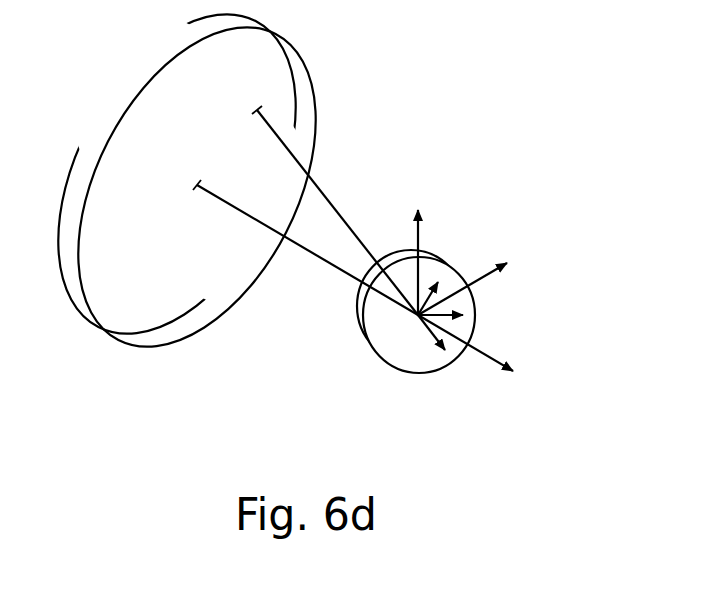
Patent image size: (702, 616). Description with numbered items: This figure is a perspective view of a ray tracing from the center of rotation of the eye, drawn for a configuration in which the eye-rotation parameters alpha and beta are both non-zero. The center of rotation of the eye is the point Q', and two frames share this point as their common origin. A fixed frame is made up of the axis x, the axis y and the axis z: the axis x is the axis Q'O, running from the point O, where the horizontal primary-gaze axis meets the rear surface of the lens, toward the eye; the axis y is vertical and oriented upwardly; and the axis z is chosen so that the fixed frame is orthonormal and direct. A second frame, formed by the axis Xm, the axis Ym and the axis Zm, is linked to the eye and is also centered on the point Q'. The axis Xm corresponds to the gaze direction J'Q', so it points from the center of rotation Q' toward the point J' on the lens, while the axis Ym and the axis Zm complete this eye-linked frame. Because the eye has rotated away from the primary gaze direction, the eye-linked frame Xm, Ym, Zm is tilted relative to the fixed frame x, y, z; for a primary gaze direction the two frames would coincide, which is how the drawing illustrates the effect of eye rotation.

The gaze direction point J' is at (326, 199).
The point of intersection of the rear surface of the lens and the axis Q'F' O is at (305, 234).
The center of rotation of the eye Q' is at (405, 331).
The x axis x is at (472, 282).
The y axis y is at (416, 248).
The z axis z is at (475, 350).
The xm axis Xm is at (465, 316).
The ym axis Ym is at (433, 282).
The zm axis Zm is at (443, 348).